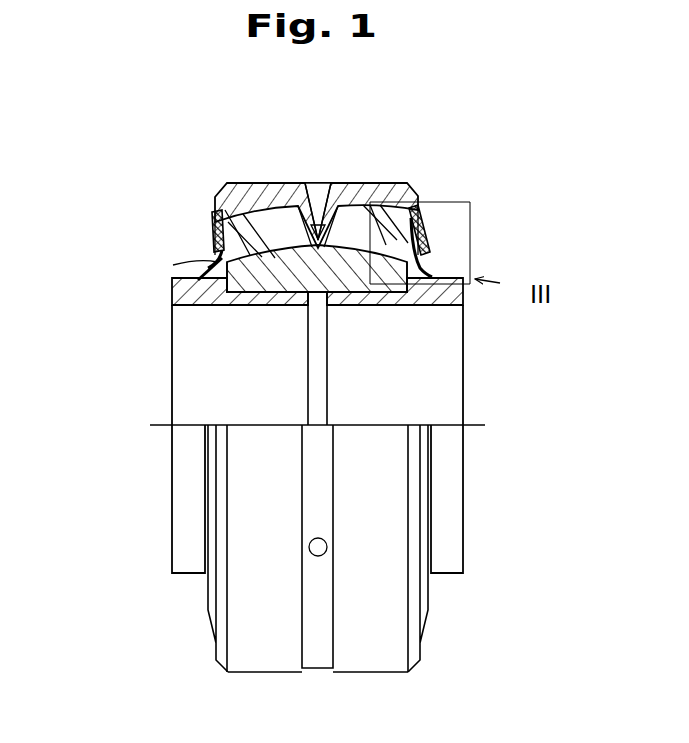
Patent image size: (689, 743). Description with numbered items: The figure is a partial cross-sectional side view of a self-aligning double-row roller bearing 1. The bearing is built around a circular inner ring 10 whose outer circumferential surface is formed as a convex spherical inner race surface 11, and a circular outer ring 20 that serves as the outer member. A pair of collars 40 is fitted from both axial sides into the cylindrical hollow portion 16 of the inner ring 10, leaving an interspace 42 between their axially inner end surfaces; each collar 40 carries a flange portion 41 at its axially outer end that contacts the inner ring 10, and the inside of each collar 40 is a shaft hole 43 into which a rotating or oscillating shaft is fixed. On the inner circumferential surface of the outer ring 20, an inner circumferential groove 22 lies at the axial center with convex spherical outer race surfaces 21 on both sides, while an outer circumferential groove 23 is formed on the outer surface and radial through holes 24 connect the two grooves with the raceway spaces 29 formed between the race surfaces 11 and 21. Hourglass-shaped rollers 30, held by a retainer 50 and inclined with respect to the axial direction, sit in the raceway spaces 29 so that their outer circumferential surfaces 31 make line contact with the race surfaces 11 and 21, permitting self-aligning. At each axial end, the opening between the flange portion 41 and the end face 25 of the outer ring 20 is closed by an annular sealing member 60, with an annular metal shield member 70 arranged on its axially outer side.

The roller bearing 1 is at (85, 278).
The inner ring 10 is at (275, 268).
The inner race surface 11 is at (362, 241).
The hollow portion 16 is at (353, 310).
The outer ring 20 is at (302, 238).
The outer race surface 21 is at (250, 267).
The inner circumferential groove 22 is at (305, 262).
The outer circumferential groove 23 is at (332, 187).
The through hole 24 is at (323, 227).
The end face 25 is at (417, 200).
The raceway space 29 is at (390, 244).
The roller 30 is at (397, 240).
The outer circumferential surface 31 is at (228, 226).
The collar 40 is at (171, 295).
The flange portion 41 is at (173, 265).
The interspace 42 is at (315, 407).
The shaft hole 43 is at (188, 394).
The retainer 50 is at (316, 232).
The sealing member 60 is at (425, 267).
The shield member 70 is at (418, 223).